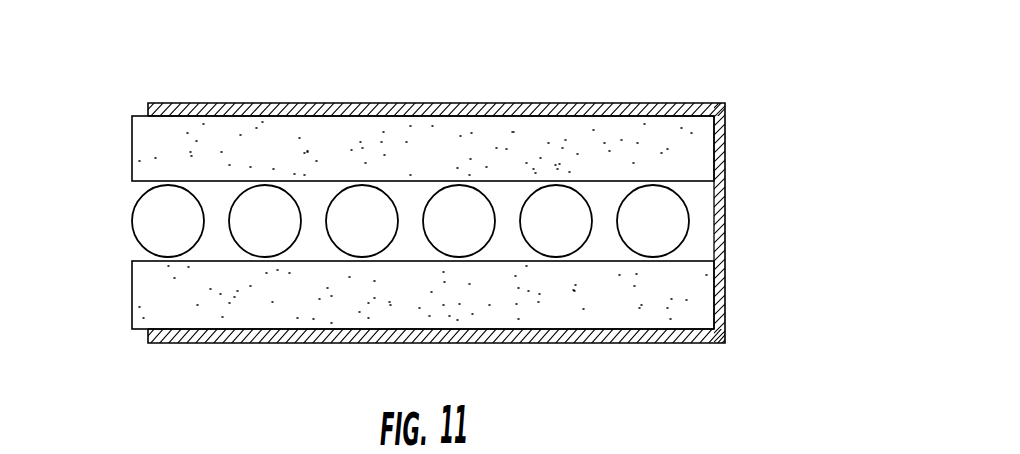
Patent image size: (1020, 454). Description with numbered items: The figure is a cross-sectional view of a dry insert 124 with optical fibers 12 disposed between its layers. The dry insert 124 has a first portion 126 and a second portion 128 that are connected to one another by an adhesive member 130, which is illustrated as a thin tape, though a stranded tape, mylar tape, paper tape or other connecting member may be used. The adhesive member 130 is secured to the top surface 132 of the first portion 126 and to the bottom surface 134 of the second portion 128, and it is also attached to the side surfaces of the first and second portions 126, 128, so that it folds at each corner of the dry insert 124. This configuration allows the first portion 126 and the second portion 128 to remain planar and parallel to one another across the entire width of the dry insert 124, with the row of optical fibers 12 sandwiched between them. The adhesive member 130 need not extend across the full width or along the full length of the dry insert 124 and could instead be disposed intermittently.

The dry insert 124 is at (814, 90).
The top surface 132 is at (146, 112).
The bottom surface 134 is at (143, 333).
The adhesive member 130 is at (726, 212).
The first portion 126 is at (131, 148).
The second portion 128 is at (131, 288).
The tubular members 12 is at (157, 208).